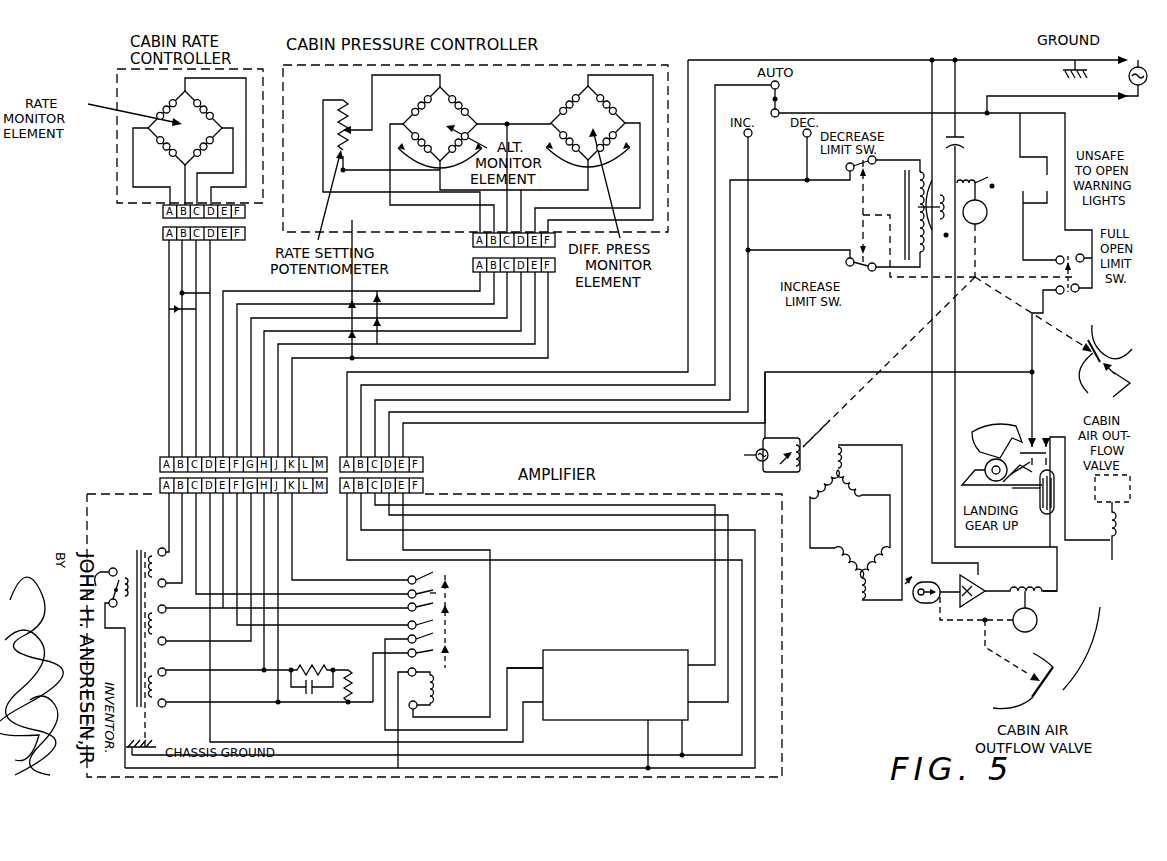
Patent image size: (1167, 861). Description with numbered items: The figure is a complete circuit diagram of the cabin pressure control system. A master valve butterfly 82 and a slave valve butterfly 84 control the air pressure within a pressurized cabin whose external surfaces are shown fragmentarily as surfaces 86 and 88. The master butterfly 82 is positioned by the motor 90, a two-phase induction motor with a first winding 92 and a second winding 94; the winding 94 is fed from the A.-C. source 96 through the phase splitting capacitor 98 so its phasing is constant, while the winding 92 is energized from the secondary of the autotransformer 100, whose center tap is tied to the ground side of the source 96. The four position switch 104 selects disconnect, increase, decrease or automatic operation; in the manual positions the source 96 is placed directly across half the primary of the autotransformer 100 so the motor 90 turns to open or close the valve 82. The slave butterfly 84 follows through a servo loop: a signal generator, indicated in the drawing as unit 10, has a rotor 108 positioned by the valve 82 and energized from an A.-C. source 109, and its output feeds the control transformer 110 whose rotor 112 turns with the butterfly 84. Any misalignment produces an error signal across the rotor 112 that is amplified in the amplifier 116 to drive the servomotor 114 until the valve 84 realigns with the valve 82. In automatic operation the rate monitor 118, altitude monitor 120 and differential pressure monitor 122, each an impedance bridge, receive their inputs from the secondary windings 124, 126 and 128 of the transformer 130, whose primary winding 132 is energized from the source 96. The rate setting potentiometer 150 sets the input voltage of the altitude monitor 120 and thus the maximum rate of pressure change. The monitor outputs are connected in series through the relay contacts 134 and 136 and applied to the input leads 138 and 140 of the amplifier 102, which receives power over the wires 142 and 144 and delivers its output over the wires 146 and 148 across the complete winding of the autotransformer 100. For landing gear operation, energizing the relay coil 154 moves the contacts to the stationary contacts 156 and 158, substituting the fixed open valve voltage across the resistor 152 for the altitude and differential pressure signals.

The rate monitor 118 is at (212, 114).
The rate setting potentiometer 150 is at (352, 97).
The altitude monitor 120 is at (468, 110).
The differential pressure monitor 122 is at (618, 110).
The four position switch 104 is at (781, 113).
The autotransformer 100 is at (904, 194).
The first winding 92 is at (936, 198).
The phase splitting capacitor 98 is at (958, 151).
The second winding 94 is at (984, 181).
The motor 90 is at (988, 214).
The A.-C. source 96 is at (1128, 80).
The external surface of pressurized cabin 86 is at (1113, 340).
The master valve butterfly 82 is at (1104, 377).
The rotor of signal generator 108 is at (795, 440).
The A.-C. source 109 is at (744, 455).
The relay 10 is at (823, 470).
The control transformer 110 is at (897, 594).
The rotor 112 is at (916, 605).
The amplifier 116 is at (984, 596).
The servomotor 114 is at (1038, 615).
The external surface of pressurized cabin 88 is at (1085, 645).
The slave valve butterfly 84 is at (1053, 690).
The transformer 130 is at (136, 562).
The primary winding 132 is at (111, 668).
The secondary winding 124 is at (168, 540).
The secondary winding 126 is at (166, 627).
The secondary winding 128 is at (166, 687).
The resistor 152 is at (351, 666).
The relay contact 134 is at (434, 576).
The stationary contact 156 is at (436, 594).
The relay contact 136 is at (434, 610).
The stationary contact 158 is at (436, 648).
The relay coil 154 is at (437, 688).
The input lead 138 is at (508, 666).
The input lead 140 is at (523, 702).
The amplifier 102 is at (595, 649).
The wire 146 is at (704, 662).
The wire 148 is at (714, 696).
The wire 142 is at (646, 742).
The wire 144 is at (684, 742).